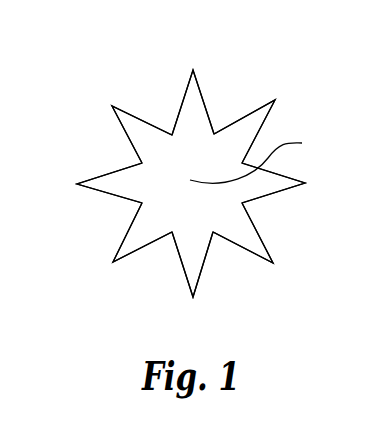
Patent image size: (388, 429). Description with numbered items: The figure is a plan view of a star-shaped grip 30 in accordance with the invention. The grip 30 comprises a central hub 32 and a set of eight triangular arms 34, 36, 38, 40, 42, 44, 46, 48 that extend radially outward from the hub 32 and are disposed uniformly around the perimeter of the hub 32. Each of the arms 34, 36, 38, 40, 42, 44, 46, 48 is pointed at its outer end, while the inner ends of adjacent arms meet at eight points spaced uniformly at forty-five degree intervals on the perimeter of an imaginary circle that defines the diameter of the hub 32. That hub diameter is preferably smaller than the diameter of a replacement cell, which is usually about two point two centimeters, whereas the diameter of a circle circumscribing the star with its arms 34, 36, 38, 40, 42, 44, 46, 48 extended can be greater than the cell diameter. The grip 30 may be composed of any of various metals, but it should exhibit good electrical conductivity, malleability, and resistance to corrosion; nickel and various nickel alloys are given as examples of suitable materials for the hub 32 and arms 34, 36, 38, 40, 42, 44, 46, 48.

The star-shaped grip 30 is at (143, 74).
The hub 32 is at (260, 160).
The triangular arm 34 is at (193, 70).
The triangular arm 36 is at (275, 100).
The triangular arm 38 is at (305, 183).
The triangular arm 40 is at (273, 263).
The triangular arm 42 is at (193, 297).
The triangular arm 44 is at (113, 262).
The triangular arm 46 is at (77, 184).
The triangular arm 48 is at (112, 106).